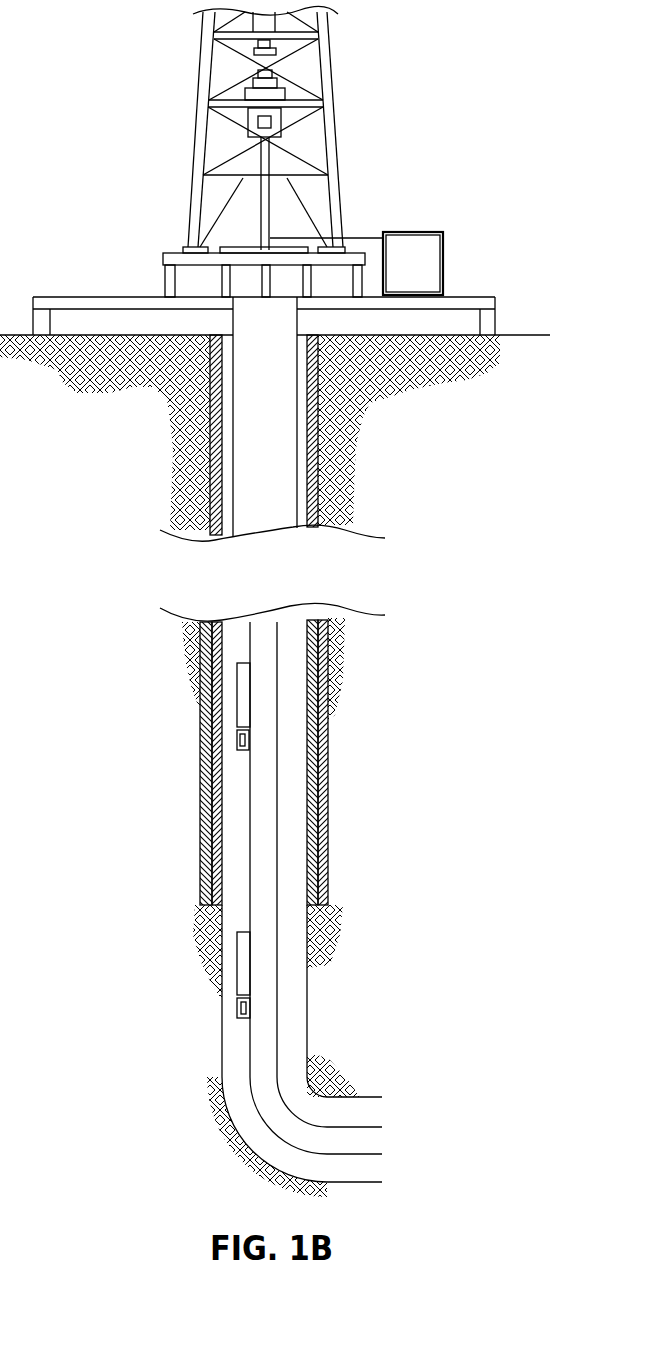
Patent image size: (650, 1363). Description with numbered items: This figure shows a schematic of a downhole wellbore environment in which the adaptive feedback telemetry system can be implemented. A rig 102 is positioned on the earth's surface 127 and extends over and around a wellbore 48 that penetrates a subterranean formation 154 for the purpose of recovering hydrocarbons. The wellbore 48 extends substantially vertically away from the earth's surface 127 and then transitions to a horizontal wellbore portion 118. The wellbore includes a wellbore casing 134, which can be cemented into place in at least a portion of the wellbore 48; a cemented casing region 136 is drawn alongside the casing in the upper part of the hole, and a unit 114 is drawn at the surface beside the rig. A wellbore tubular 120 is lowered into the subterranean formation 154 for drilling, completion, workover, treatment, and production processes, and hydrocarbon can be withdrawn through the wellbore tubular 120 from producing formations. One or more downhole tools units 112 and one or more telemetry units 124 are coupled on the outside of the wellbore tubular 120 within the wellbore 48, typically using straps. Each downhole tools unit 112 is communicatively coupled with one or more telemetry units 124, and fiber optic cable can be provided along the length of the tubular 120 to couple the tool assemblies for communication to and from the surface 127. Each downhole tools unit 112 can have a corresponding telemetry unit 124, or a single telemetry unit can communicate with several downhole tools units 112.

The rig 102 is at (340, 67).
The surface control unit 114 is at (437, 232).
The earth's surface 127 is at (515, 335).
The subterranean formation 154 is at (137, 432).
The wellbore casing 134 is at (295, 431).
The surface casing 136 is at (310, 462).
The wellbore 48 is at (293, 733).
The wellbore tubular 120 is at (278, 765).
The horizontal wellbore portion 118 is at (378, 1182).
The downhole tools unit 112 is at (237, 697).
The telemetry unit 124 is at (240, 740).